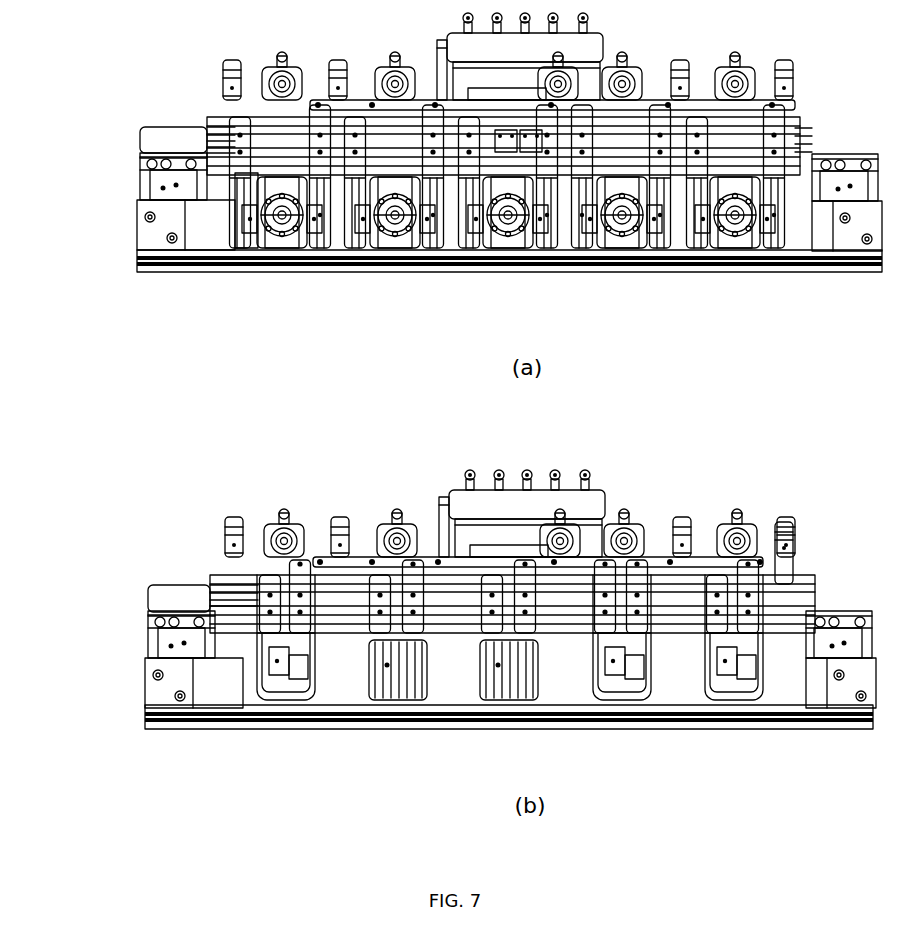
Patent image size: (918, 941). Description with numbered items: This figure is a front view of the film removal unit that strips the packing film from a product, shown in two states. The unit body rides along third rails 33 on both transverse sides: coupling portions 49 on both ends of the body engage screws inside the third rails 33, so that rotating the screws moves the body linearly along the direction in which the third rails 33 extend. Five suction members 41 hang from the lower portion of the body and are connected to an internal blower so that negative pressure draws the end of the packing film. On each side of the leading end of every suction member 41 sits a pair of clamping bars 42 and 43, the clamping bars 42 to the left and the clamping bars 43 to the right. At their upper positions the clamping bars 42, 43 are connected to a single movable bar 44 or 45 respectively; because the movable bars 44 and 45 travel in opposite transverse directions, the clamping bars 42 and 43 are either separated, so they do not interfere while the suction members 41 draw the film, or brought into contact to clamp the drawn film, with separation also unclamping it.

The third rail 33 is at (137, 188).
The suction member 41 is at (280, 238).
The clamping bar 42 is at (236, 250).
The clamping bar 43 is at (321, 250).
The movable bar 44 is at (275, 117).
The movable bar 45 is at (372, 103).
The coupling portion 49 is at (163, 137).